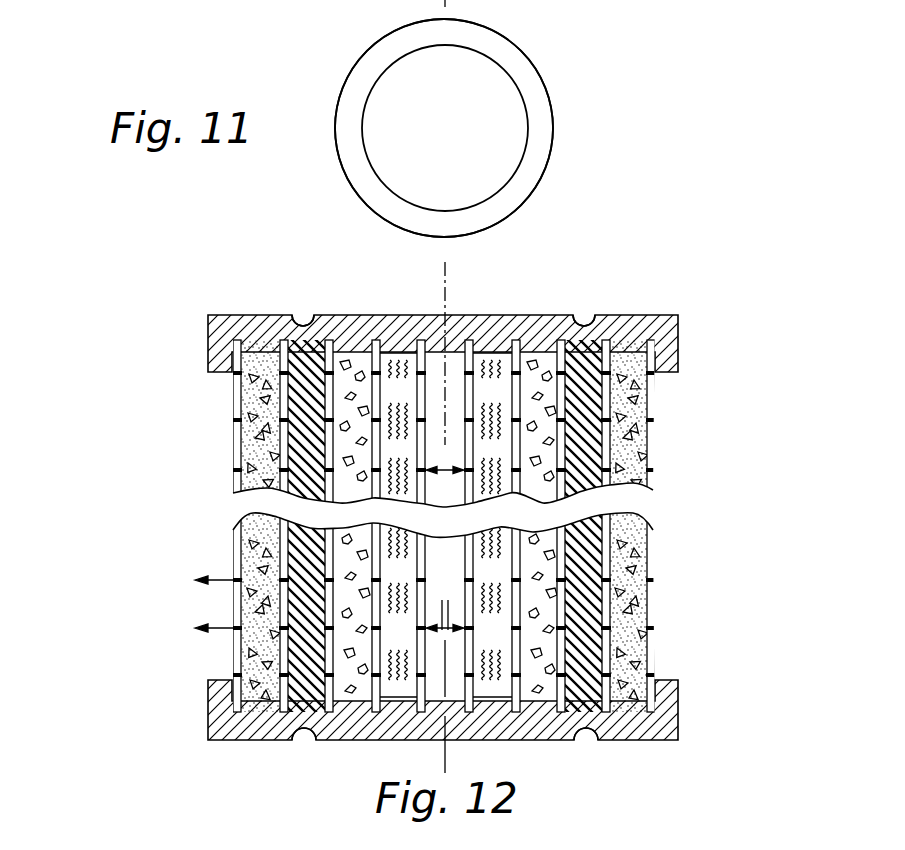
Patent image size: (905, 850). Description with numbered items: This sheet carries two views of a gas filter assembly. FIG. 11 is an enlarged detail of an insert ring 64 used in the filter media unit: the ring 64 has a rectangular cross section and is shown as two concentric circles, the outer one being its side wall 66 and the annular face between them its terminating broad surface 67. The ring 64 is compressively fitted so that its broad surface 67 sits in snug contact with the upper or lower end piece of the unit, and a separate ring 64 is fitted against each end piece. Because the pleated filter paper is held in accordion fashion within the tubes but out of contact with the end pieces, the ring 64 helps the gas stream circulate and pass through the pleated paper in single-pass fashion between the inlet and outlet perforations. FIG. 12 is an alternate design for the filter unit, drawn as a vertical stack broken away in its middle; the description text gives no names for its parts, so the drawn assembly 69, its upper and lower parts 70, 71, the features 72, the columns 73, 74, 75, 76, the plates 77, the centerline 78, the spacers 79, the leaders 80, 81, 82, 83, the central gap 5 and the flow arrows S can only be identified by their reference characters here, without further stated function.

In FIG. 11, the ring 64 is at (470, 128).
In FIG. 11, the side wall 66 is at (537, 68).
In FIG. 11, the terminating broad surface 67 is at (360, 100).
In FIG. 12, the stack assembly 69 is at (163, 281).
In FIG. 12, the top end plate 70 is at (661, 315).
In FIG. 12, the bottom end plate 71 is at (648, 742).
In FIG. 12, the notch 72 is at (590, 323).
In FIG. 12, the corrugated layer 73 is at (440, 317).
In FIG. 12, the particle bed layer 74 is at (388, 317).
In FIG. 12, the solid layer 75 is at (318, 343).
In FIG. 12, the granular layer 76 is at (273, 348).
In FIG. 12, the partition plate 77 is at (227, 345).
In FIG. 12, the centerline 78 is at (453, 267).
In FIG. 12, the spacer 79 is at (655, 578).
In FIG. 12, the screen 80 is at (387, 387).
In FIG. 12, the catalyst particles 81 is at (340, 412).
In FIG. 12, the insulation 82 is at (295, 440).
In FIG. 12, the granular material 83 is at (260, 472).
In FIG. 12, the central passage 5 is at (450, 470).
In FIG. 12, the fluid flow S is at (220, 582).